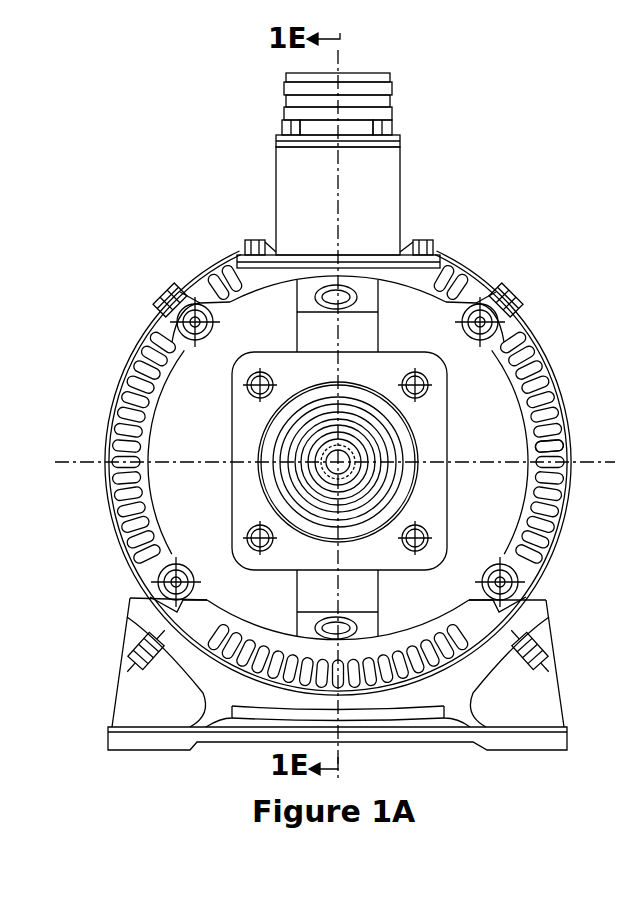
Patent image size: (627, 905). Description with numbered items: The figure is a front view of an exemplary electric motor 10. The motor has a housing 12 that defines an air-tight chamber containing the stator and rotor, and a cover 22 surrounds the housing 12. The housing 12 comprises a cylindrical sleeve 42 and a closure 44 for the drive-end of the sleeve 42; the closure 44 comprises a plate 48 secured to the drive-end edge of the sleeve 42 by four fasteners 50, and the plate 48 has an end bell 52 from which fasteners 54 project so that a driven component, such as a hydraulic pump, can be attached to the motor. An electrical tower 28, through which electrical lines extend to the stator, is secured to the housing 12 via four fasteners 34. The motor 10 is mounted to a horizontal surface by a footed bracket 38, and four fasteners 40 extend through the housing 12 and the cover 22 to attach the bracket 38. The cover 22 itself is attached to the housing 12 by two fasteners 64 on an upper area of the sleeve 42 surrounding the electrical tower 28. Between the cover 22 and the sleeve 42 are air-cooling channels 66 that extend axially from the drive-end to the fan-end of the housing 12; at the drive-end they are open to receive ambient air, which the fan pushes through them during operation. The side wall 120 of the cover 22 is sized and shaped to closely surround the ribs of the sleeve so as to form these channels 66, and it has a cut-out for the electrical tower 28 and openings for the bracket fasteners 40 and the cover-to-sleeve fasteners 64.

The electric motor 10 is at (412, 137).
The housing 12 is at (135, 543).
The cover 22 is at (517, 410).
The electrical tower 28 is at (382, 195).
The fasteners 34 is at (247, 243).
The footed bracket 38 is at (528, 728).
The fasteners 40 is at (116, 694).
The cylindrical sleeve 42 is at (110, 487).
The closure 44 is at (470, 434).
The plate 48 is at (483, 511).
The fasteners 50 is at (170, 335).
The mounting flange 52 is at (428, 418).
The fasteners 54 is at (247, 392).
The fasteners 64 is at (160, 293).
The air-cooling channels 66 is at (373, 675).
The side wall 120 is at (540, 463).